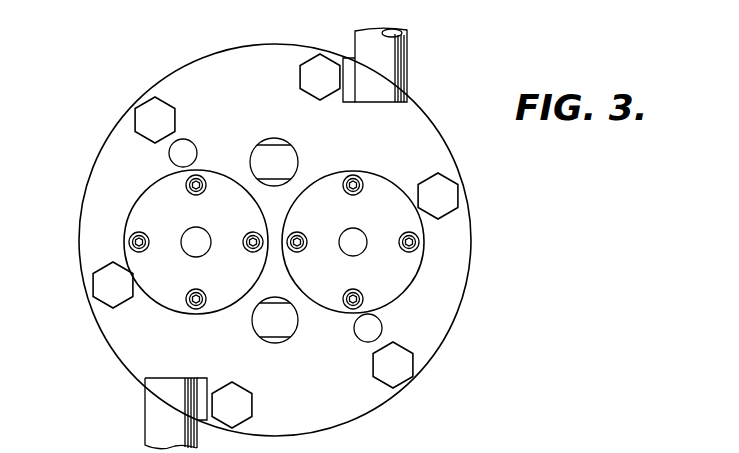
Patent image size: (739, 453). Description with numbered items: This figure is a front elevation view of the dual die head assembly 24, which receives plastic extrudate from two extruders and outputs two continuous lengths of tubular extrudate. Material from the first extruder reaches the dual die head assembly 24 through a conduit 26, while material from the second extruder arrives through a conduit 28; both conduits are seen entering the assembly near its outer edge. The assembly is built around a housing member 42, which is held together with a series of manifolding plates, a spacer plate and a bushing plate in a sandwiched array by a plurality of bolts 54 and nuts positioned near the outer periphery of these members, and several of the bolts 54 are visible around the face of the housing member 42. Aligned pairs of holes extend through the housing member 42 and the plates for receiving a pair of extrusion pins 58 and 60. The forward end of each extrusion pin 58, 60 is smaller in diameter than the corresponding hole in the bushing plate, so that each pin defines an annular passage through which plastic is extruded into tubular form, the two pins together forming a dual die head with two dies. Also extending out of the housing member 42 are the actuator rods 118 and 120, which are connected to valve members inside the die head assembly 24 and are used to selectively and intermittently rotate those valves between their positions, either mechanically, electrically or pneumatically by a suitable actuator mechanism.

The dual die head assembly 24 is at (486, 276).
The conduit 26 is at (407, 47).
The conduit 28 is at (157, 418).
The housing member 42 is at (190, 72).
The bolts 54 is at (323, 61).
The extrusion pin 58 is at (294, 152).
The extrusion pin 60 is at (291, 322).
The actuator rod 118 is at (356, 248).
The actuator rod 120 is at (197, 244).